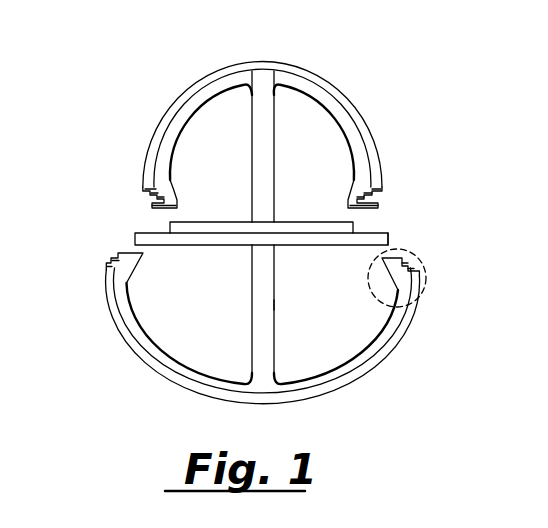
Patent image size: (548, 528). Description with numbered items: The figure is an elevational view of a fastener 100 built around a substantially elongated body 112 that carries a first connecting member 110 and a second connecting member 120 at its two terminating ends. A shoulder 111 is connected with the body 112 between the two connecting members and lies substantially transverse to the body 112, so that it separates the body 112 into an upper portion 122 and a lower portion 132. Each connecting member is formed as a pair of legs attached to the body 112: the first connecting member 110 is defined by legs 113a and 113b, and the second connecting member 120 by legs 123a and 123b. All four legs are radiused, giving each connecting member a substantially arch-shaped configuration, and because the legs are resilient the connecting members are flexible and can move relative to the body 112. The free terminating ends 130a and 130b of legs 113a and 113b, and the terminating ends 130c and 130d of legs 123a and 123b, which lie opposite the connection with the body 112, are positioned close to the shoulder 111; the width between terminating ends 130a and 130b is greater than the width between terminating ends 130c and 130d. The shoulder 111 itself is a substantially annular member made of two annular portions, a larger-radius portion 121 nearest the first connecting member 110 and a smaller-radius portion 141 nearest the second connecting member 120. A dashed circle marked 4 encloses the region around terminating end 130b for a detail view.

The fastener 100 is at (155, 92).
The first connecting member 110 is at (352, 381).
The shoulder 111 is at (134, 230).
The body 112 is at (249, 322).
The leg 113a is at (120, 330).
The leg 113b is at (404, 336).
The second connecting member 120 is at (338, 83).
The annular portion 121 is at (380, 233).
The body portion 122 is at (276, 165).
The leg 123a is at (150, 141).
The leg 123b is at (358, 108).
The terminating end 130a is at (108, 265).
The terminating end 130b is at (424, 268).
The terminating end 130c is at (150, 197).
The terminating end 130d is at (372, 212).
The body portion 132 is at (276, 304).
The annular portion 141 is at (358, 223).
The detail area of FIG. 4 is at (423, 263).